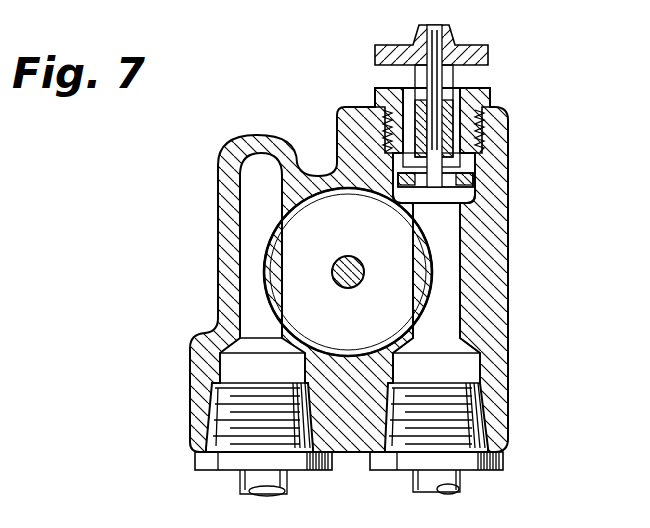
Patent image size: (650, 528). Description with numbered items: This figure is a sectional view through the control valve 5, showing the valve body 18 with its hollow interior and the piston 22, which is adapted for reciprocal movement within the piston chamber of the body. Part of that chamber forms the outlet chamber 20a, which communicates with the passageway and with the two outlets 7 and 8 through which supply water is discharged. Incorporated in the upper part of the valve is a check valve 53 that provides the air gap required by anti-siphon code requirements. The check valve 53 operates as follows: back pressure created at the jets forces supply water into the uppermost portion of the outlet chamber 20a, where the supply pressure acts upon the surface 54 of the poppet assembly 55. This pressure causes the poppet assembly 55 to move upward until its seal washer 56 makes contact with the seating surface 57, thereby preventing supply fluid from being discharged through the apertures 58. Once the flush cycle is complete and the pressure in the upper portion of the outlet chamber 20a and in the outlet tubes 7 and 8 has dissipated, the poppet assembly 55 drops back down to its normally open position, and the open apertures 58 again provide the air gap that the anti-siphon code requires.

The control valve 5 is at (390, 265).
The outlet 7 is at (282, 478).
The outlet 8 is at (460, 473).
The valve body 18 is at (505, 270).
The outlet chamber 20a is at (458, 231).
The piston 22 is at (404, 300).
The check valve 53 is at (483, 97).
The surface 54 is at (457, 191).
The poppet assembly 55 is at (437, 137).
The seal washer 56 is at (462, 166).
The seating surface 57 is at (375, 143).
The apertures 58 is at (473, 75).